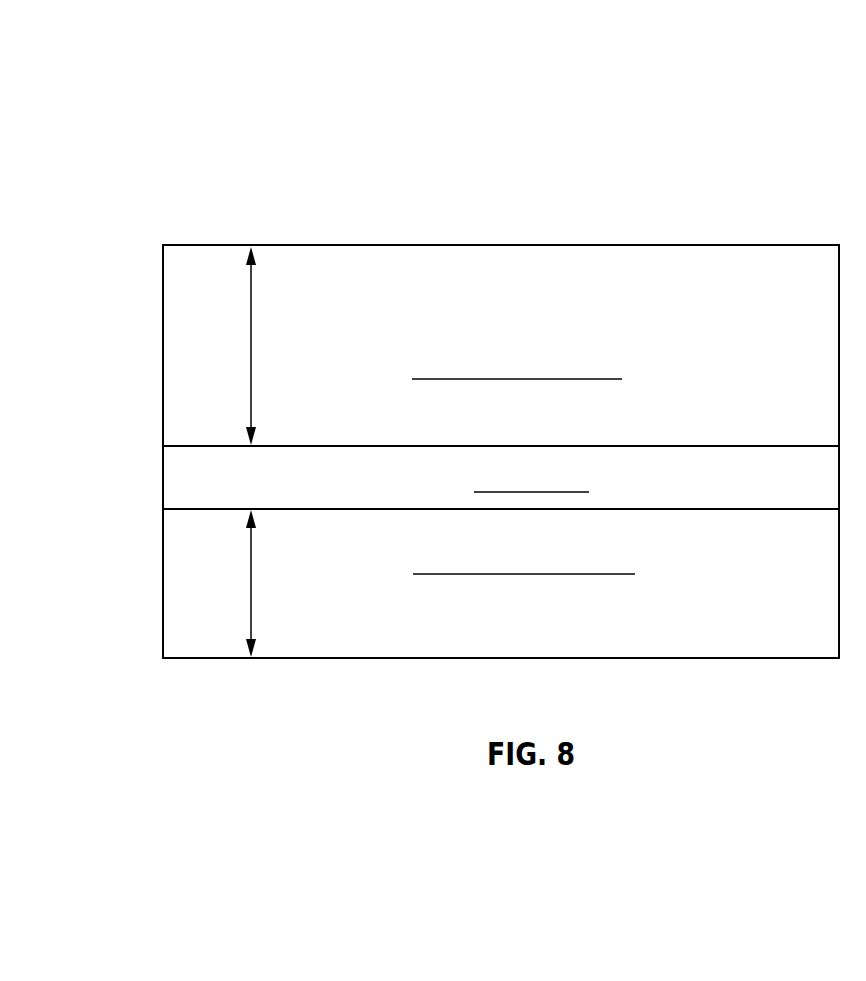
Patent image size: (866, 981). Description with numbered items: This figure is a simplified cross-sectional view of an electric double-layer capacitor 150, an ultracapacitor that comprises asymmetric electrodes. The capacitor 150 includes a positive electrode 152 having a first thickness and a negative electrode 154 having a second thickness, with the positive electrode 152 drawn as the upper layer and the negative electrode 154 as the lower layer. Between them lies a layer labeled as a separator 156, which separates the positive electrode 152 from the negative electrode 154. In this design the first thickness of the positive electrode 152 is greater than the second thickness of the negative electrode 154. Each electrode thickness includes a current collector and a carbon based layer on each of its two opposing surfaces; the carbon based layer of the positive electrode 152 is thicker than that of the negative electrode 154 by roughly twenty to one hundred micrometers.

The electric double-layer capacitor 150 is at (88, 110).
The positive electrode 152 is at (178, 364).
The negative electrode 154 is at (181, 585).
The separator 156 is at (172, 487).